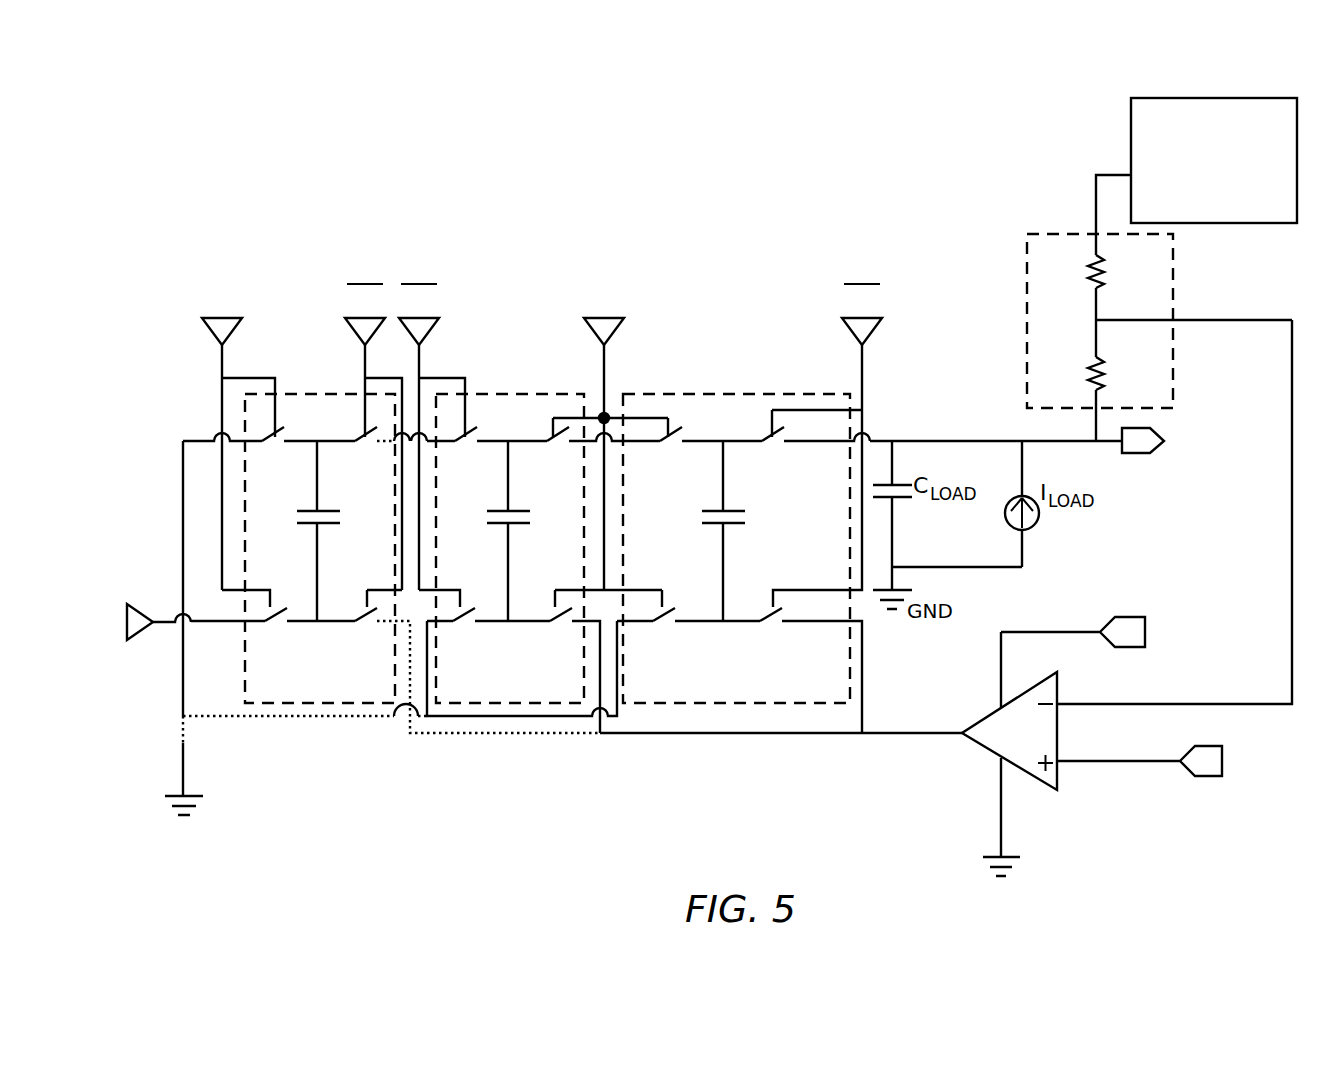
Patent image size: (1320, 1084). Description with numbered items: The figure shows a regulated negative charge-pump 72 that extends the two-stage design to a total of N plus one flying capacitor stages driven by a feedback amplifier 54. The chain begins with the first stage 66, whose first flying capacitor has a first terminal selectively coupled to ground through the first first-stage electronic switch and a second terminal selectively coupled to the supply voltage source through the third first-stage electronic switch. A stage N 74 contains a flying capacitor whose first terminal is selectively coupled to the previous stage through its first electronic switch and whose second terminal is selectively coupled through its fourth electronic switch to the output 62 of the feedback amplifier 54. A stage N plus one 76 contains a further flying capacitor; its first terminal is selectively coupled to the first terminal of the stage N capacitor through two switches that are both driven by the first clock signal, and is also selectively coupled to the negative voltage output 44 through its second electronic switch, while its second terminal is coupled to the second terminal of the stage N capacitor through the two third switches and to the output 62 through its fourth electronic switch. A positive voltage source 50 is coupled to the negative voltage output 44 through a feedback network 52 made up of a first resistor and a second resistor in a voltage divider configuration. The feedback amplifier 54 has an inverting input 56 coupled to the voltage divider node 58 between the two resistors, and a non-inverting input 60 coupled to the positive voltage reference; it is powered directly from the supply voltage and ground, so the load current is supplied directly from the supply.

The regulated negative charge-pump 72 is at (919, 180).
The first stage 66 is at (307, 423).
The stage N 74 is at (500, 423).
The stage (N+1) 76 is at (712, 423).
The positive voltage source 50 is at (1226, 218).
The feedback network 52 is at (1063, 268).
The voltage divider node 58 is at (1096, 320).
The negative voltage output 44 is at (1140, 453).
The feedback amplifier 54 is at (1040, 746).
The inverting input 56 is at (1117, 704).
The non-inverting input 60 is at (1117, 761).
The output 62 is at (877, 733).